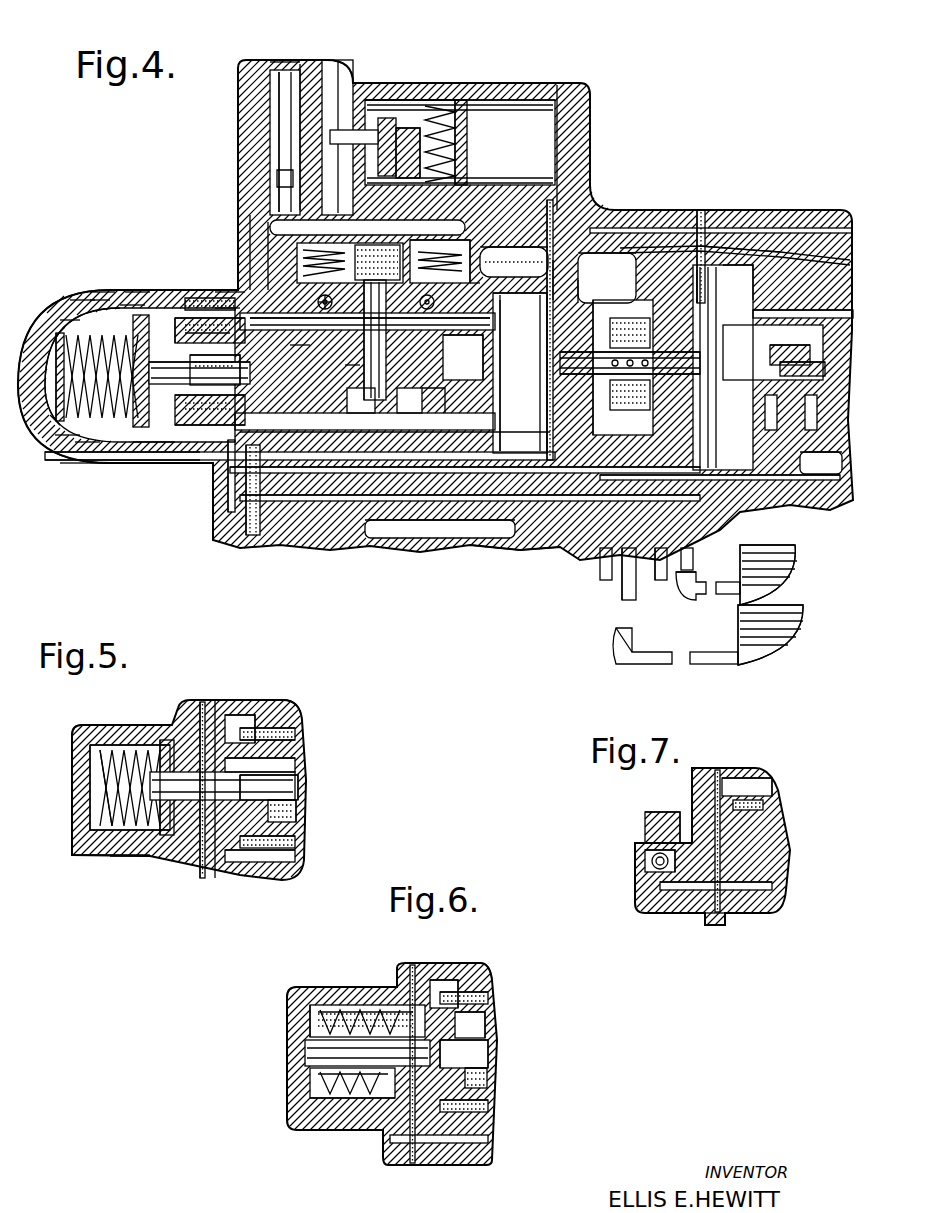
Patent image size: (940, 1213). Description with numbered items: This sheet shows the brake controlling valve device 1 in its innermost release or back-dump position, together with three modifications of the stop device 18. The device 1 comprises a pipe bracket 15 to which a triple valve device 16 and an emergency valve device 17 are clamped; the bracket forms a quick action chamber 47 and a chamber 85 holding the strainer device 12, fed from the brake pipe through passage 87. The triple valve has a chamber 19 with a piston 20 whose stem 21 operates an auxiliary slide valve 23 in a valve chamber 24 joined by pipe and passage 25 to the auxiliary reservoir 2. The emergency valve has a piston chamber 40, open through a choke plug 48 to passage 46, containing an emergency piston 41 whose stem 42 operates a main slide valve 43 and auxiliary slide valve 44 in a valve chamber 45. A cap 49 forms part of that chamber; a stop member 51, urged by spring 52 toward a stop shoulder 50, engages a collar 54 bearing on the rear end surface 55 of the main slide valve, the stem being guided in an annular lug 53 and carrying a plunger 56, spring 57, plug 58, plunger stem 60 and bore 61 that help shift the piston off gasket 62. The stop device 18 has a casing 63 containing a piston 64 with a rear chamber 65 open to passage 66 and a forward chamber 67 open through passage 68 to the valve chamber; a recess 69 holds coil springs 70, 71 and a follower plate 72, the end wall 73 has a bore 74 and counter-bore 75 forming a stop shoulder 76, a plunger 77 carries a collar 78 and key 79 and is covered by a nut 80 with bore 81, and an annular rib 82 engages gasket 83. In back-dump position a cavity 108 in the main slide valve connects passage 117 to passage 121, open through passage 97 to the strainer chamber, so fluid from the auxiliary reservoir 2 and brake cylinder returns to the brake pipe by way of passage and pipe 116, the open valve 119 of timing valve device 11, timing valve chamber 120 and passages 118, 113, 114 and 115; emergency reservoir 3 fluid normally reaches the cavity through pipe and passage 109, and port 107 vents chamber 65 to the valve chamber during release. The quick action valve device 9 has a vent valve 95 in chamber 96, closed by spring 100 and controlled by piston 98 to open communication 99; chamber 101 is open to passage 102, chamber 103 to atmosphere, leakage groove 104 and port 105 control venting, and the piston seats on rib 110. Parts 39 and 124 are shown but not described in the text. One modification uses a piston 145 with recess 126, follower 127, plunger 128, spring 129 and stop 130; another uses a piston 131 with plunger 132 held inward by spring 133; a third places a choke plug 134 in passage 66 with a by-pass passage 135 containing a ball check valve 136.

In FIG. 4, the brake valve device 1 is at (590, 84).
In FIG. 4, the pipe connection 2 is at (754, 547).
In FIG. 4, the pipe connection 3 is at (802, 611).
In FIG. 4, the release valve portion 9 is at (226, 125).
In FIG. 4, the pipe bracket 11 is at (204, 514).
In FIG. 4, the rotary shaft 12 is at (625, 300).
In FIG. 4, the casing wall 15 is at (575, 125).
In FIG. 4, the casing section 16 is at (745, 212).
In FIG. 4, the cylinder cover 17 is at (540, 83).
In FIG. 4, the valve housing 18 is at (30, 338).
In FIG. 5, the valve housing 18 is at (67, 728).
In FIG. 6, the valve housing 18 is at (283, 982).
In FIG. 7, the valve housing 18 is at (710, 766).
In FIG. 4, the passage 19 is at (732, 258).
In FIG. 4, the passage 20 is at (748, 266).
In FIG. 4, the rotary valve 21 is at (802, 345).
In FIG. 4, the valve spring 23 is at (802, 365).
In FIG. 4, the passage 24 is at (832, 310).
In FIG. 4, the pipe passage 25 is at (692, 586).
In FIG. 4, the packing 39 is at (700, 280).
In FIG. 4, the chamber 40 is at (562, 270).
In FIG. 4, the piston 41 is at (502, 400).
In FIG. 4, the piston stem 42 is at (397, 320).
In FIG. 5, the piston stem 42 is at (262, 762).
In FIG. 4, the chamber 43 is at (465, 345).
In FIG. 4, the valve seat 44 is at (332, 318).
In FIG. 4, the spring 45 is at (457, 300).
In FIG. 5, the spring 45 is at (297, 737).
In FIG. 6, the spring 45 is at (490, 1004).
In FIG. 4, the valve 46 is at (480, 290).
In FIG. 4, the chamber 47 is at (607, 265).
In FIG. 4, the passage 48 is at (520, 265).
In FIG. 4, the casing 49 is at (240, 158).
In FIG. 5, the casing 49 is at (282, 705).
In FIG. 6, the casing 49 is at (482, 967).
In FIG. 4, the cover 50 is at (228, 292).
In FIG. 4, the cover flange 51 is at (225, 310).
In FIG. 5, the cover flange 51 is at (292, 725).
In FIG. 6, the cover flange 51 is at (487, 992).
In FIG. 4, the spring 52 is at (187, 298).
In FIG. 5, the spring 52 is at (294, 735).
In FIG. 6, the spring 52 is at (452, 985).
In FIG. 4, the spring seat 53 is at (185, 320).
In FIG. 5, the spring seat 53 is at (287, 834).
In FIG. 6, the spring seat 53 is at (490, 1108).
In FIG. 4, the valve 54 is at (300, 350).
In FIG. 4, the valve seat 55 is at (350, 372).
In FIG. 4, the valve 56 is at (302, 315).
In FIG. 4, the spring 57 is at (185, 333).
In FIG. 5, the spring 57 is at (284, 806).
In FIG. 6, the spring 57 is at (470, 1052).
In FIG. 4, the spring seat 58 is at (187, 405).
In FIG. 5, the spring seat 58 is at (246, 836).
In FIG. 6, the spring seat 58 is at (487, 1030).
In FIG. 4, the stem 60 is at (232, 366).
In FIG. 5, the stem 60 is at (274, 786).
In FIG. 6, the stem 60 is at (462, 1065).
In FIG. 4, the follower 61 is at (187, 350).
In FIG. 5, the follower 61 is at (272, 832).
In FIG. 6, the follower 61 is at (442, 1122).
In FIG. 4, the packing ring 62 is at (551, 292).
In FIG. 4, the housing wall 63 is at (70, 315).
In FIG. 5, the housing wall 63 is at (72, 770).
In FIG. 6, the housing wall 63 is at (292, 1020).
In FIG. 4, the chamber 64 is at (68, 325).
In FIG. 4, the spring 65 is at (57, 377).
In FIG. 5, the spring 65 is at (90, 800).
In FIG. 6, the spring 65 is at (305, 1040).
In FIG. 7, the spring 65 is at (745, 785).
In FIG. 4, the housing bottom 66 is at (100, 463).
In FIG. 5, the housing bottom 66 is at (90, 853).
In FIG. 6, the housing bottom 66 is at (337, 1122).
In FIG. 7, the housing bottom 66 is at (770, 892).
In FIG. 4, the partition 67 is at (132, 305).
In FIG. 5, the partition 67 is at (196, 722).
In FIG. 4, the flange 68 is at (137, 292).
In FIG. 4, the bolt 69 is at (100, 292).
In FIG. 4, the gasket 70 is at (97, 300).
In FIG. 4, the chamber 71 is at (80, 305).
In FIG. 4, the passage 72 is at (112, 470).
In FIG. 4, the passage 73 is at (75, 470).
In FIG. 4, the passage 74 is at (85, 442).
In FIG. 4, the passage 75 is at (60, 455).
In FIG. 4, the passage 76 is at (70, 460).
In FIG. 4, the piston stem 77 is at (200, 368).
In FIG. 4, the spring seat 78 is at (180, 420).
In FIG. 4, the passage 79 is at (60, 440).
In FIG. 4, the passage 80 is at (50, 400).
In FIG. 4, the passage 81 is at (55, 420).
In FIG. 4, the passage 82 is at (140, 445).
In FIG. 4, the packing 83 is at (160, 442).
In FIG. 5, the packing 83 is at (202, 878).
In FIG. 4, the chamber 85 is at (600, 276).
In FIG. 4, the bearing 87 is at (600, 410).
In FIG. 4, the piston 95 is at (410, 100).
In FIG. 4, the cylinder 96 is at (465, 83).
In FIG. 4, the gasket 97 is at (690, 240).
In FIG. 4, the release valve stem 98 is at (285, 115).
In FIG. 4, the chamber 99 is at (385, 83).
In FIG. 4, the cylinder wall 100 is at (478, 98).
In FIG. 4, the valve seat 101 is at (265, 210).
In FIG. 4, the passage 102 is at (262, 237).
In FIG. 4, the bushing 103 is at (322, 50).
In FIG. 4, the cap 104 is at (284, 62).
In FIG. 4, the valve 105 is at (280, 175).
In FIG. 4, the passage 107 is at (452, 386).
In FIG. 4, the stem 108 is at (398, 386).
In FIG. 4, the pipe 109 is at (362, 500).
In FIG. 4, the cylinder head 110 is at (340, 62).
In FIG. 4, the pipe 113 is at (628, 546).
In FIG. 4, the bracket face 114 is at (542, 556).
In FIG. 4, the passage 115 is at (322, 475).
In FIG. 4, the passage 116 is at (622, 480).
In FIG. 4, the passage 117 is at (402, 522).
In FIG. 4, the passage 118 is at (477, 526).
In FIG. 4, the passage 119 is at (228, 475).
In FIG. 4, the gasket 120 is at (250, 520).
In FIG. 4, the piston sleeve 121 is at (502, 430).
In FIG. 4, the pipe 124 is at (660, 570).
In FIG. 5, the spring 126 is at (136, 750).
In FIG. 5, the spring seat 127 is at (125, 872).
In FIG. 5, the chamber 128 is at (229, 725).
In FIG. 5, the follower 129 is at (132, 830).
In FIG. 5, the piston 130 is at (175, 832).
In FIG. 6, the spring 131 is at (312, 1076).
In FIG. 6, the spring seat 132 is at (302, 1105).
In FIG. 6, the spring 133 is at (346, 1012).
In FIG. 7, the passage 134 is at (700, 900).
In FIG. 7, the choke fitting 135 is at (660, 836).
In FIG. 7, the ball check valve 136 is at (652, 862).
In FIG. 5, the spring seat 145 is at (116, 745).